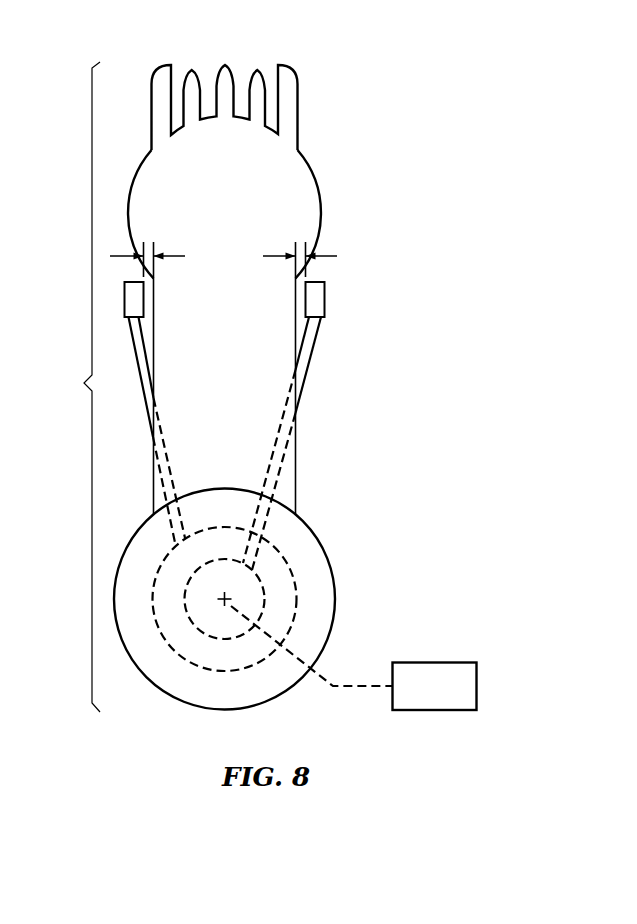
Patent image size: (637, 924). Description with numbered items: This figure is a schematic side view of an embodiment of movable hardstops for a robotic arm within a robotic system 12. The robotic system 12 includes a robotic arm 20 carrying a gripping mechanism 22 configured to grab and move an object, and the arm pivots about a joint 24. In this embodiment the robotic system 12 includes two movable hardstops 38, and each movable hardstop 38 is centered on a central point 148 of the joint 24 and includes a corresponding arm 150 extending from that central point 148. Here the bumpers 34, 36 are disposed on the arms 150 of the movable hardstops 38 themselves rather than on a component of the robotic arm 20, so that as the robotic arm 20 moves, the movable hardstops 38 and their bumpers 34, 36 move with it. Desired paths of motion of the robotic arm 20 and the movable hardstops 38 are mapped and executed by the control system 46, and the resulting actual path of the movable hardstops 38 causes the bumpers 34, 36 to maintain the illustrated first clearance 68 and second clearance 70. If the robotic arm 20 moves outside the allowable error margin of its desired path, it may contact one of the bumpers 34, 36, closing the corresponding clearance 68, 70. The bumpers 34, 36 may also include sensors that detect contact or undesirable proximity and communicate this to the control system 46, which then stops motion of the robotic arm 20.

The robotic system 12 is at (322, 44).
The robotic arm 20 is at (84, 384).
The gripping mechanism 22 is at (308, 114).
The second joint 24 is at (338, 528).
The bumper 34 is at (123, 296).
The bumper 36 is at (325, 296).
The movable hardstop 38 is at (150, 478).
The control system 46 is at (354, 658).
The first clearance 68 is at (132, 255).
The second clearance 70 is at (322, 254).
The central point 148 is at (229, 598).
The arm 150 is at (162, 490).